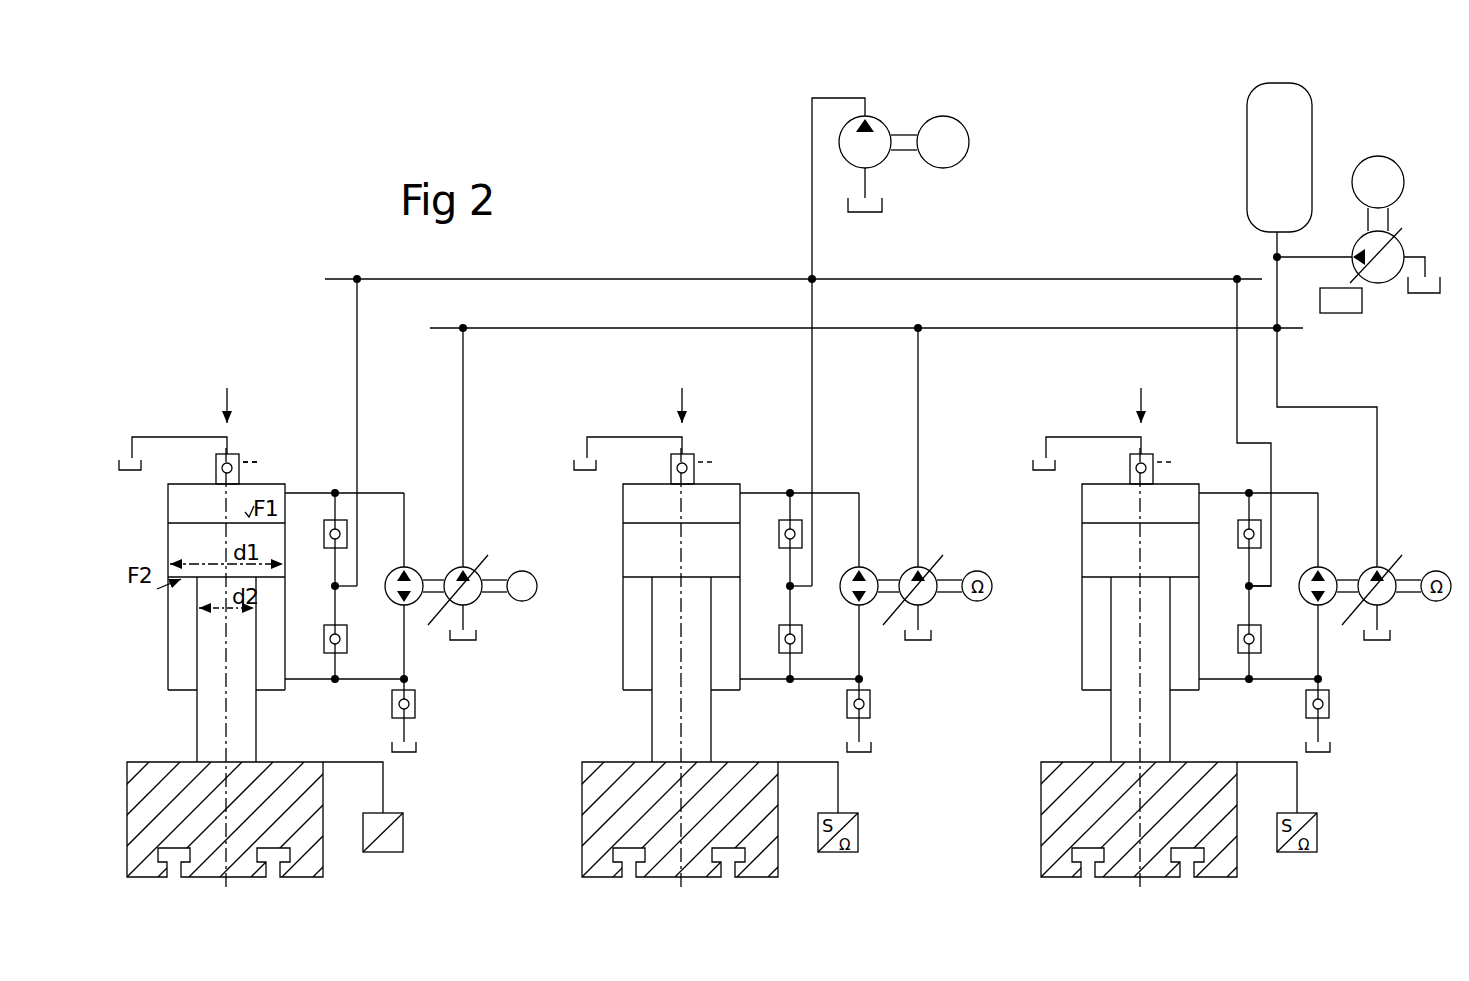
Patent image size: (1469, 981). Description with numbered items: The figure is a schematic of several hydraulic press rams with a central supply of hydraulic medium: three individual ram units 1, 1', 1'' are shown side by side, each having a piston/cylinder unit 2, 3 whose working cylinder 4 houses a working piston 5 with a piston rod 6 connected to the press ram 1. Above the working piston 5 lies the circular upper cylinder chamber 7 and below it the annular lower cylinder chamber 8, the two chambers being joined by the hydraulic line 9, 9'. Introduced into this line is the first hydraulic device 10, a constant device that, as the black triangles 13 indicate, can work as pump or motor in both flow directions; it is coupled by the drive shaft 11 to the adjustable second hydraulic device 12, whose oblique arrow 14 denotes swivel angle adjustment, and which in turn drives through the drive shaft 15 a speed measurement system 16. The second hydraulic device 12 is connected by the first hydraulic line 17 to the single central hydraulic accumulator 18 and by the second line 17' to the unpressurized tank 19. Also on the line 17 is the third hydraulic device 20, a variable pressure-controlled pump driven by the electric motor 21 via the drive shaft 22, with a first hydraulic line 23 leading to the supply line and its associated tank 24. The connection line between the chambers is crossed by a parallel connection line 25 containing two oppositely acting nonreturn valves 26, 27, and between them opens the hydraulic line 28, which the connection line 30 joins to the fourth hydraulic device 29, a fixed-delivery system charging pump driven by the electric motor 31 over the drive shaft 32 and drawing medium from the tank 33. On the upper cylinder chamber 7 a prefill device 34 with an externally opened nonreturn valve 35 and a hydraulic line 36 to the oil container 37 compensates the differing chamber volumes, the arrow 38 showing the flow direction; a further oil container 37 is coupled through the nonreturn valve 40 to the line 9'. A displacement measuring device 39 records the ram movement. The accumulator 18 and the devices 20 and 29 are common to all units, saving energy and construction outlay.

The press ram 1 is at (215, 819).
The ram unit 1' is at (807, 785).
The ram unit 1'' is at (1264, 787).
The piston/cylinder unit 2 is at (267, 478).
The piston/cylinder unit 3 is at (267, 478).
The working cylinder 4 is at (158, 603).
The working piston 5 is at (204, 553).
The piston rod 6 is at (217, 640).
The upper cylinder chamber 7 is at (204, 514).
The lower cylinder chamber 8 is at (185, 681).
The hydraulic line 9 is at (344, 510).
The pressure medium line 9' is at (364, 672).
The first hydraulic device 10 is at (396, 563).
The drive shaft 11 is at (430, 580).
The second hydraulic device 12 is at (478, 608).
The symbol 13 is at (461, 566).
The arrow 14 is at (481, 569).
The drive shaft 15 is at (498, 591).
The speed measurement system 16 is at (528, 600).
The first hydraulic line 17 is at (948, 447).
The second line 17' is at (436, 628).
The hydraulic accumulator 18 is at (1292, 174).
The tank 19 is at (459, 646).
The third hydraulic device 20 is at (1390, 298).
The electric motor 21 is at (1396, 171).
The drive shaft 22 is at (1390, 215).
The first hydraulic line 23 is at (1323, 255).
The tank 24 is at (1426, 294).
The parallel connection line 25 is at (333, 568).
The nonreturn valve 26 is at (349, 526).
The nonreturn valve 27 is at (322, 648).
The hydraulic line 28 is at (362, 347).
The fourth hydraulic device 29 is at (908, 119).
The connection line 30 is at (810, 158).
The electric motor 31 is at (962, 147).
The drive shaft 32 is at (904, 150).
The tank 33 is at (860, 207).
The prefill device 34 is at (244, 447).
The nonreturn valve 35 is at (216, 468).
The hydraulic line 36 is at (179, 457).
The oil container 37 is at (131, 474).
The arrow 38 is at (231, 403).
The displacement measuring device 39 is at (377, 849).
The nonreturn valve 40 is at (417, 708).